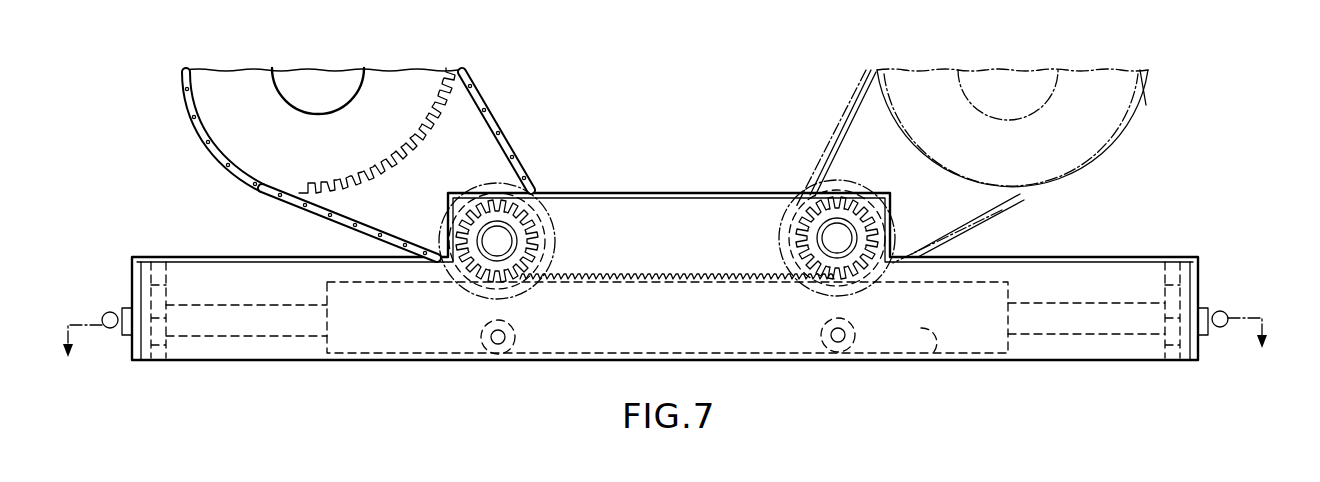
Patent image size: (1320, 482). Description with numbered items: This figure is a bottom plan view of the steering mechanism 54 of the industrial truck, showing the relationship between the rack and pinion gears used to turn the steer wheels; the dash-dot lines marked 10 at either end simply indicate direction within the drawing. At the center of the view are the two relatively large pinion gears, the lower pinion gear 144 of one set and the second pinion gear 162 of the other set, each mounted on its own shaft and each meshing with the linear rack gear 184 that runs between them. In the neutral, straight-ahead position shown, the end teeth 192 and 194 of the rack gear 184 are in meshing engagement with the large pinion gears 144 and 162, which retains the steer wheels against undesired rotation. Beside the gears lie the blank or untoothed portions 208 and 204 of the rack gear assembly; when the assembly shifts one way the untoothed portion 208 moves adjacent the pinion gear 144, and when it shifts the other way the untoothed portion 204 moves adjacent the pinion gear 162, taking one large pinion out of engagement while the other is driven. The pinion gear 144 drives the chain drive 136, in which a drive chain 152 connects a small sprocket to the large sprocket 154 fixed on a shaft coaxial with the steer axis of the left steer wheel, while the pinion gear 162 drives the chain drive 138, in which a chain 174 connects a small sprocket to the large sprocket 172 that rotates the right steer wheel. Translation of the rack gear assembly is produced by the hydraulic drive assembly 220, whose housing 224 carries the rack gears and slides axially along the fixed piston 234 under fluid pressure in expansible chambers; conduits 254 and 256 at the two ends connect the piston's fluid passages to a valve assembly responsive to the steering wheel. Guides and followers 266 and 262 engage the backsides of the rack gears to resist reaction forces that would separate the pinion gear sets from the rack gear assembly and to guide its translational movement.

The direction of travel 10 is at (660, 355).
The steering mechanism 54 is at (1266, 150).
The chain drive 136 is at (556, 136).
The chain drive 138 is at (822, 117).
The lower pinion gear 144 is at (547, 222).
The drive chain 152 is at (306, 207).
The large sprocket 154 is at (210, 105).
The second pinion gear 162 is at (786, 251).
The large sprocket 172 is at (1150, 97).
The chain 174 is at (832, 130).
The linear rack gear 184 is at (652, 270).
The end tooth 192 is at (522, 296).
The end tooth 194 is at (838, 292).
The blank or untoothed portion 204 is at (996, 250).
The blank or untoothed portion 208 is at (364, 250).
The hydraulic drive assembly 220 is at (610, 358).
The housing 224 is at (931, 350).
The fixed piston 234 is at (256, 296).
The conduit 254 is at (1224, 311).
The conduit 256 is at (110, 311).
The guide and follower 262 is at (843, 360).
The guide and follower 266 is at (490, 362).